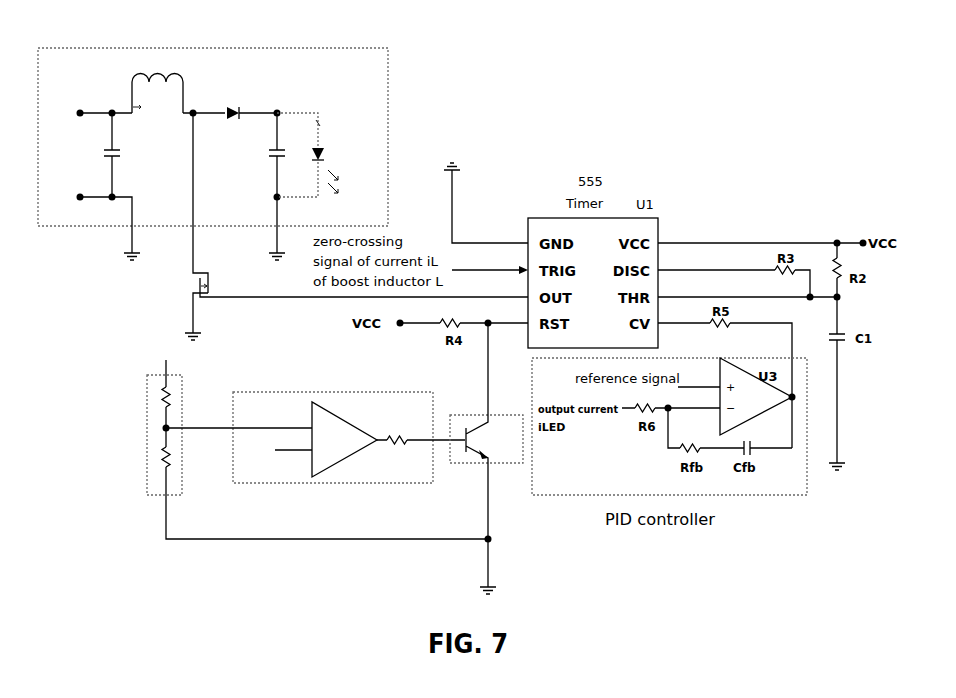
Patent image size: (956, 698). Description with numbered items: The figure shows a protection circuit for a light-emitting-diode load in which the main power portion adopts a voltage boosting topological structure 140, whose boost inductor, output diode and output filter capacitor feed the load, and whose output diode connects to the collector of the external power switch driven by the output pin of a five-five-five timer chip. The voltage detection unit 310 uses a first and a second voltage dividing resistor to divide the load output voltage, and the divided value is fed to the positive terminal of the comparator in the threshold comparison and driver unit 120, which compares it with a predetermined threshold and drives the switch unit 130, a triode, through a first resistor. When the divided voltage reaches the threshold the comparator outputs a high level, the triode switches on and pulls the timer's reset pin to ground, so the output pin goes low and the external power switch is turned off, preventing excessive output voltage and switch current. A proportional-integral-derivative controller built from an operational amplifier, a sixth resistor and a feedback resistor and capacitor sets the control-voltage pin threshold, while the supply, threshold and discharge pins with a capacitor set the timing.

The voltage boosting topological structure 140 is at (283, 178).
The voltage detection unit 310 is at (258, 442).
The threshold comparison and driver unit 120 is at (325, 459).
The switch unit 130 is at (489, 431).